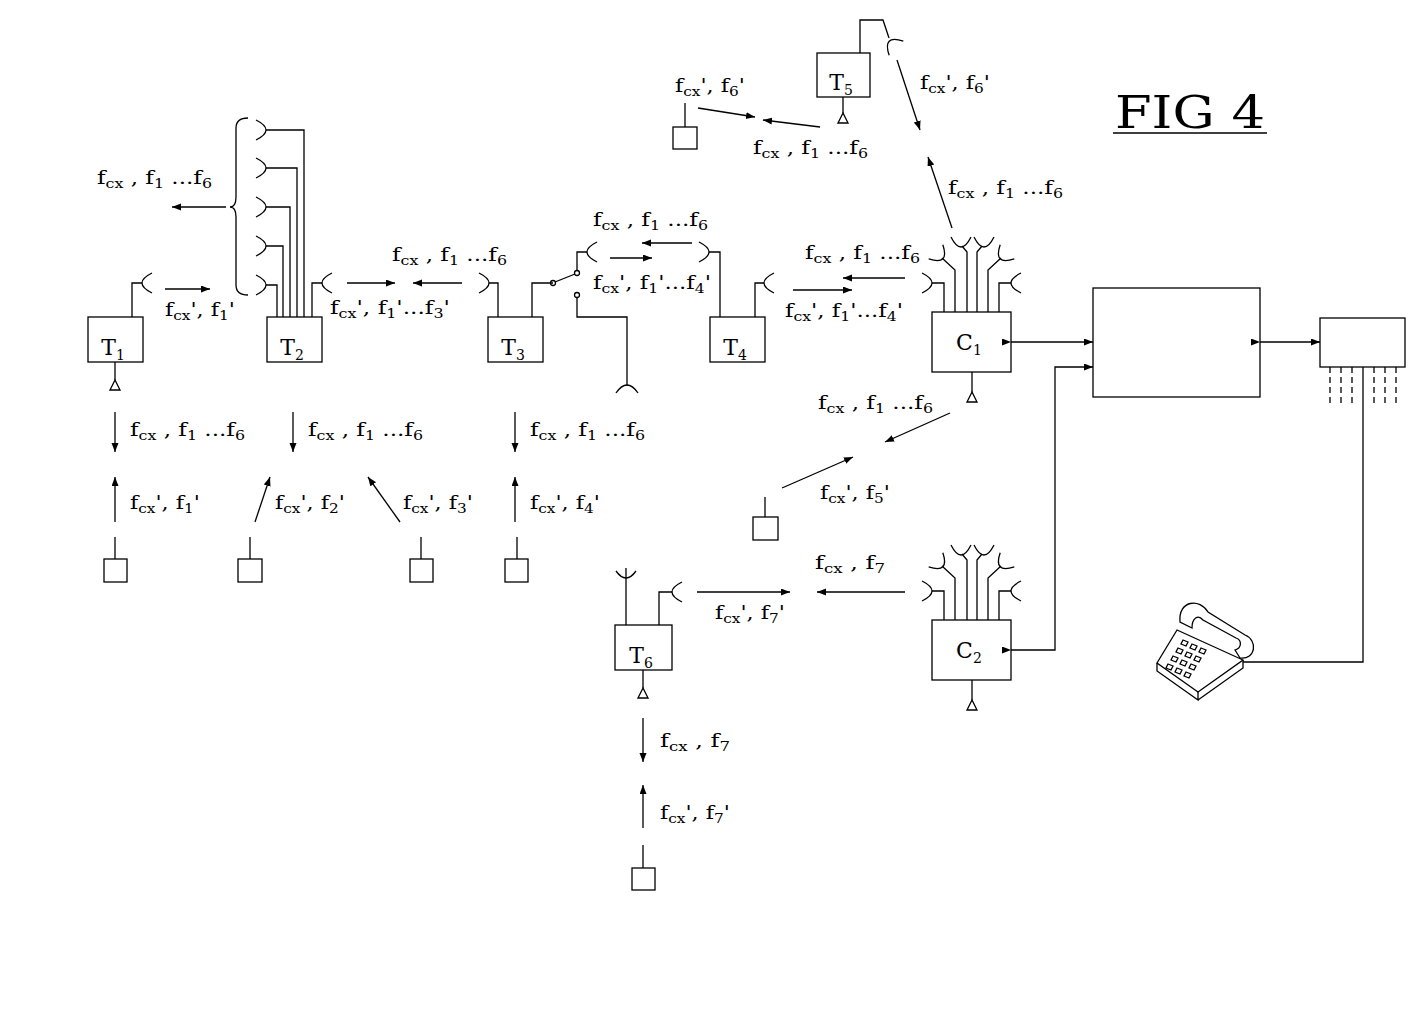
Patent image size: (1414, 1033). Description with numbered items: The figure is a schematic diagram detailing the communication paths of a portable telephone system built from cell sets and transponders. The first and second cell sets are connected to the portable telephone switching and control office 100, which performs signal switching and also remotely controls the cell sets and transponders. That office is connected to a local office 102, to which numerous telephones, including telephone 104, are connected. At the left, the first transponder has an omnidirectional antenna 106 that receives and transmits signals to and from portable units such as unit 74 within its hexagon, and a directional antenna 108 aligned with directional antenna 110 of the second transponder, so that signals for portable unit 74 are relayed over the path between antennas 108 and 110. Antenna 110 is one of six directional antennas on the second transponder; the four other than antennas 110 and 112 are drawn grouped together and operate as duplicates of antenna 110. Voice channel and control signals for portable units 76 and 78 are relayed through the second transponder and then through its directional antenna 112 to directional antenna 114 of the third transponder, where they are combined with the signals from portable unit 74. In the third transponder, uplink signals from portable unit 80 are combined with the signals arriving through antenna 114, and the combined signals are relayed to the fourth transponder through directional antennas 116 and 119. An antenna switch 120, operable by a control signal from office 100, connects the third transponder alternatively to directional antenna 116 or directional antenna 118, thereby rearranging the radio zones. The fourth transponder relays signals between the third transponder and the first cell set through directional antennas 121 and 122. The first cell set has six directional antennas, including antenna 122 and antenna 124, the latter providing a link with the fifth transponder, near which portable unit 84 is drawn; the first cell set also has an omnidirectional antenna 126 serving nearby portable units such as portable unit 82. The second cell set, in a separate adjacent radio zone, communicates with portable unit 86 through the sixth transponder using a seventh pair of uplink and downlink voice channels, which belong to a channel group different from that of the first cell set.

The portable unit 74 is at (144, 585).
The portable unit 76 is at (278, 585).
The portable unit 78 is at (391, 602).
The portable unit 80 is at (486, 614).
The portable unit 82 is at (731, 503).
The portable unit 84 is at (673, 137).
The portable unit 86 is at (697, 867).
The portable telephone switching and control office 100 is at (1176, 319).
The local office 102 is at (1351, 326).
The telephone 104 is at (1188, 623).
The omnidirectional antenna 106 is at (169, 375).
The directional antenna 108 is at (119, 269).
The directional antenna 110 is at (238, 217).
The directional antenna 112 is at (351, 261).
The directional antenna 114 is at (456, 317).
The directional antenna 116 is at (562, 223).
The directional antenna 118 is at (648, 368).
The directional antenna 119 is at (742, 252).
The antenna switch 120 is at (530, 266).
The directional antenna 121 is at (781, 272).
The directional antenna 122 is at (893, 316).
The directional antenna 124 is at (938, 259).
The omnidirectional antenna 126 is at (1000, 428).